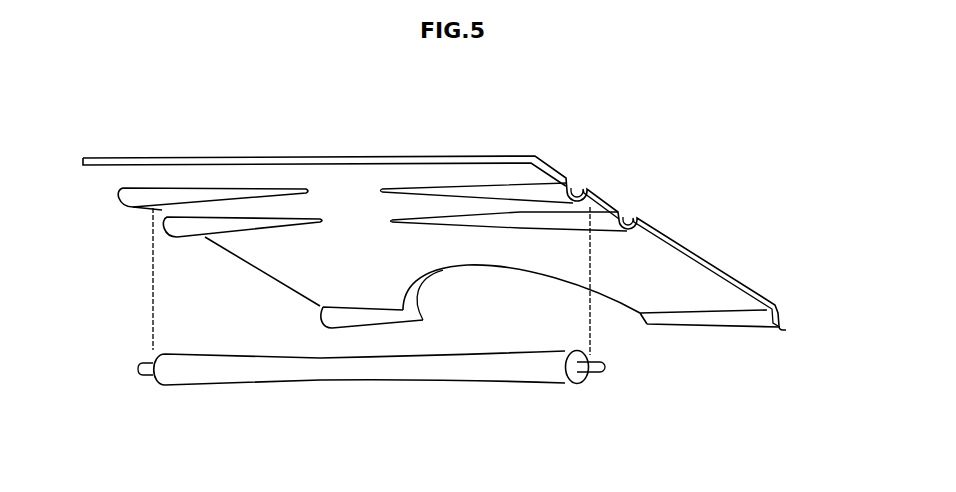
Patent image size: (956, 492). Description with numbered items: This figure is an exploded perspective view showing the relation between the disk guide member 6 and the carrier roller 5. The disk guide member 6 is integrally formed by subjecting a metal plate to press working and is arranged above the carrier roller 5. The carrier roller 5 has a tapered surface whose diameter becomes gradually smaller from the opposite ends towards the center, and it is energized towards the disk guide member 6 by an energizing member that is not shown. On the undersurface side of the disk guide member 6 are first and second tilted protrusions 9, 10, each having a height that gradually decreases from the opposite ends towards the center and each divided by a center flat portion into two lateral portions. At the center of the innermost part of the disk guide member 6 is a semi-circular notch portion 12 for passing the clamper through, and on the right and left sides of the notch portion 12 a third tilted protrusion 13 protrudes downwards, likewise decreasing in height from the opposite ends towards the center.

The disk guide member 6 is at (351, 147).
The first tilted protrusion 9 is at (143, 198).
The second tilted protrusion 10 is at (183, 225).
The notch portion 12 is at (485, 267).
The third tilted protrusion 13 is at (337, 318).
The carrier roller 5 is at (543, 372).